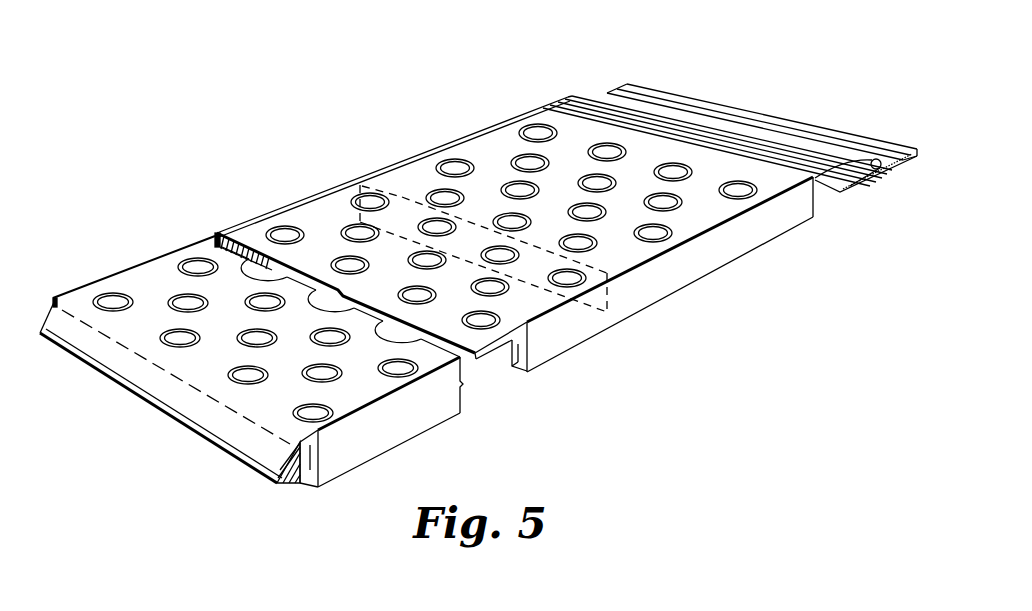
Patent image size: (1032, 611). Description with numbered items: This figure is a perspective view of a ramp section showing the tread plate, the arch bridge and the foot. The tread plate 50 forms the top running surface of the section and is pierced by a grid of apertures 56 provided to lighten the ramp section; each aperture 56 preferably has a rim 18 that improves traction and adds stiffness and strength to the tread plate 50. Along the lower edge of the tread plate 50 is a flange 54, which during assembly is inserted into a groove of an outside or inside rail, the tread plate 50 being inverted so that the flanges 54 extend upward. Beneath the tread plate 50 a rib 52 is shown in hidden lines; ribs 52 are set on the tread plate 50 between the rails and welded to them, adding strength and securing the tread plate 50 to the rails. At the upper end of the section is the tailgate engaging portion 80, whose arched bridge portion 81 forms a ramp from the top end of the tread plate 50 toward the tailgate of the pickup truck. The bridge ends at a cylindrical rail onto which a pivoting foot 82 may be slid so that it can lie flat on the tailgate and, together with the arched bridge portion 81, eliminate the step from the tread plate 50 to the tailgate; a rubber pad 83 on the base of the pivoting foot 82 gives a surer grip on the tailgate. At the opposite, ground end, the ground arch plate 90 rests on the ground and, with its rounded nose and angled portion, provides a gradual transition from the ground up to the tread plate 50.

The rim 18 is at (298, 228).
The tread plate 50 is at (514, 225).
The rib 52 is at (402, 197).
The flange 54 is at (487, 355).
The aperture 56 is at (259, 198).
The tailgate engaging portion 80 is at (709, 131).
The arched bridge portion 81 is at (568, 97).
The pivoting foot 82 is at (737, 118).
The rubber pad 83 is at (877, 182).
The ground arch plate 90 is at (207, 410).